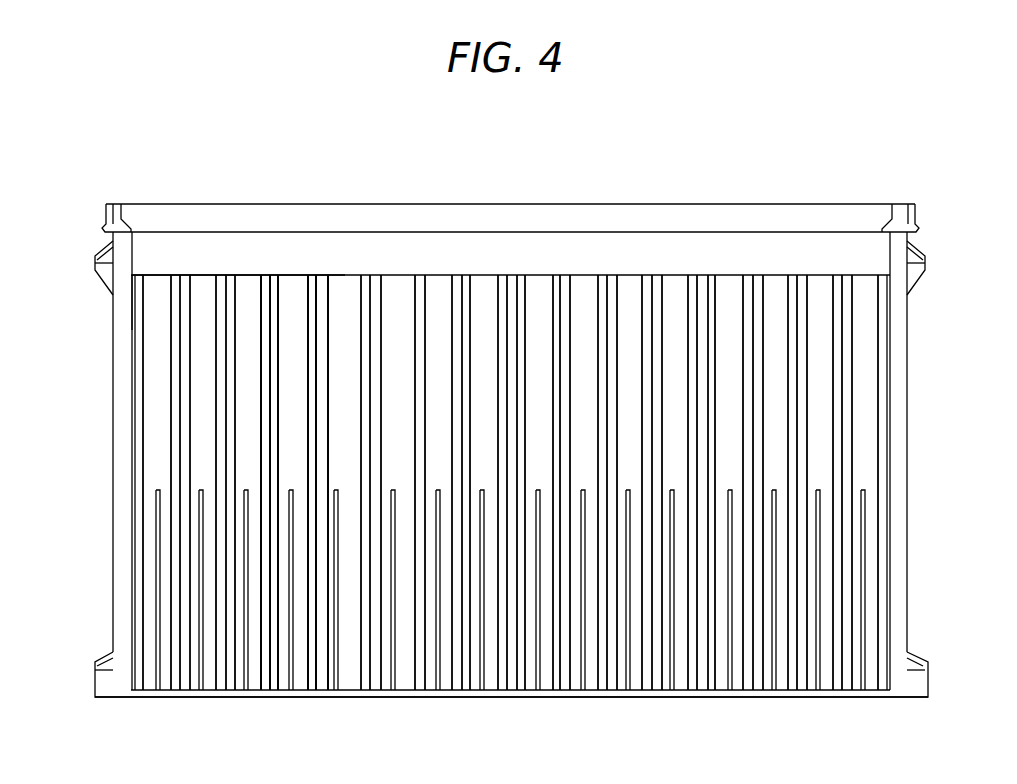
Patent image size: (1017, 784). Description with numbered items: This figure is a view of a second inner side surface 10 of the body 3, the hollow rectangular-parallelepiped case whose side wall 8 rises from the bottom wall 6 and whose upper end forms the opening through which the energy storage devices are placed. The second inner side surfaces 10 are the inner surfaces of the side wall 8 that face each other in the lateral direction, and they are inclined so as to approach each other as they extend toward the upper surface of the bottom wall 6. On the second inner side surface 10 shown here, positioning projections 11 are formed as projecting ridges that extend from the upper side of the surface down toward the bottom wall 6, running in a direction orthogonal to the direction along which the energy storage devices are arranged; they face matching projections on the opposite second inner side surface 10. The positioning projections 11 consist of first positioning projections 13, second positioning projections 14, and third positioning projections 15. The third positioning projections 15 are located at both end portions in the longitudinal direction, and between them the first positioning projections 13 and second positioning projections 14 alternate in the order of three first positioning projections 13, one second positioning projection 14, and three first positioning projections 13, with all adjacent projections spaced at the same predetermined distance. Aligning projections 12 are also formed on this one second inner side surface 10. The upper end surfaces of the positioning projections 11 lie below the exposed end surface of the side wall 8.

The body 3 is at (723, 204).
The bottom wall 6 is at (548, 698).
The side wall 8 is at (906, 434).
The second inner side surface 10 is at (487, 292).
The positioning projection 11 is at (348, 137).
The aligning projection 12 is at (291, 655).
The first positioning projection 13 is at (275, 280).
The second positioning projection 14 is at (316, 280).
The third positioning projection 15 is at (138, 275).